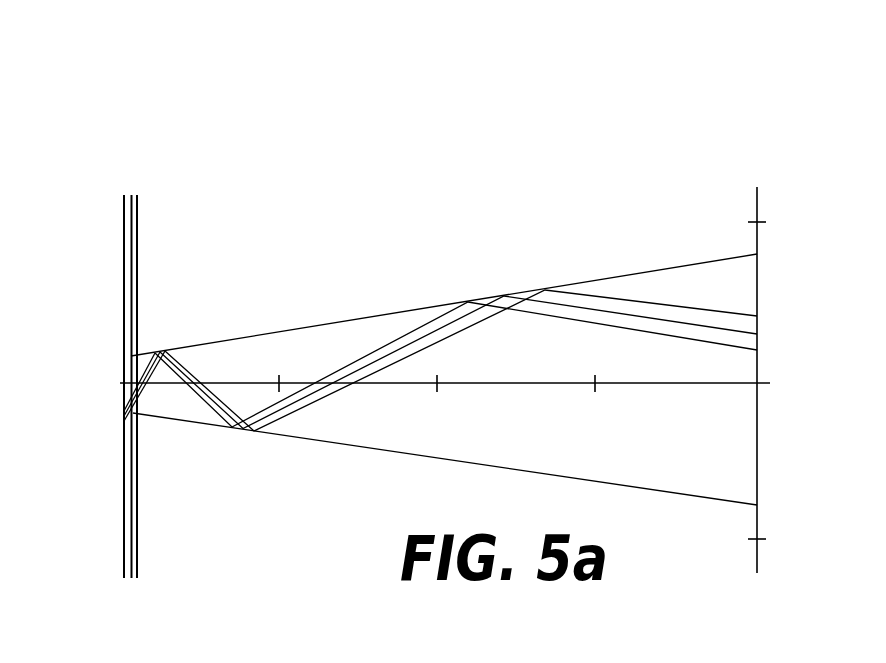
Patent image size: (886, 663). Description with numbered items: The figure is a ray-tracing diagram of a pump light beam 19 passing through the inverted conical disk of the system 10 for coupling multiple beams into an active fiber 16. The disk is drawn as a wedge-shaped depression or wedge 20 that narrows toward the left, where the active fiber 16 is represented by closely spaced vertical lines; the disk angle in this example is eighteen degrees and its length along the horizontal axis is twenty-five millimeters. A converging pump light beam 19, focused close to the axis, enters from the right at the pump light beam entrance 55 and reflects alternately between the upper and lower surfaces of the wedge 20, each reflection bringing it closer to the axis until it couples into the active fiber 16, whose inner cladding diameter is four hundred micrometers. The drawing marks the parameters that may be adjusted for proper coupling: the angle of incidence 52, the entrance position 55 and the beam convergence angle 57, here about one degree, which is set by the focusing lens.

The system 10 is at (174, 111).
The active fiber 16 is at (101, 478).
The pump light beam 19 is at (678, 336).
The depressions or wedges 20 is at (700, 283).
The angle of incidence 52 is at (630, 300).
The pump light beam entrance 55 is at (757, 336).
The convergence angle 57 is at (130, 382).